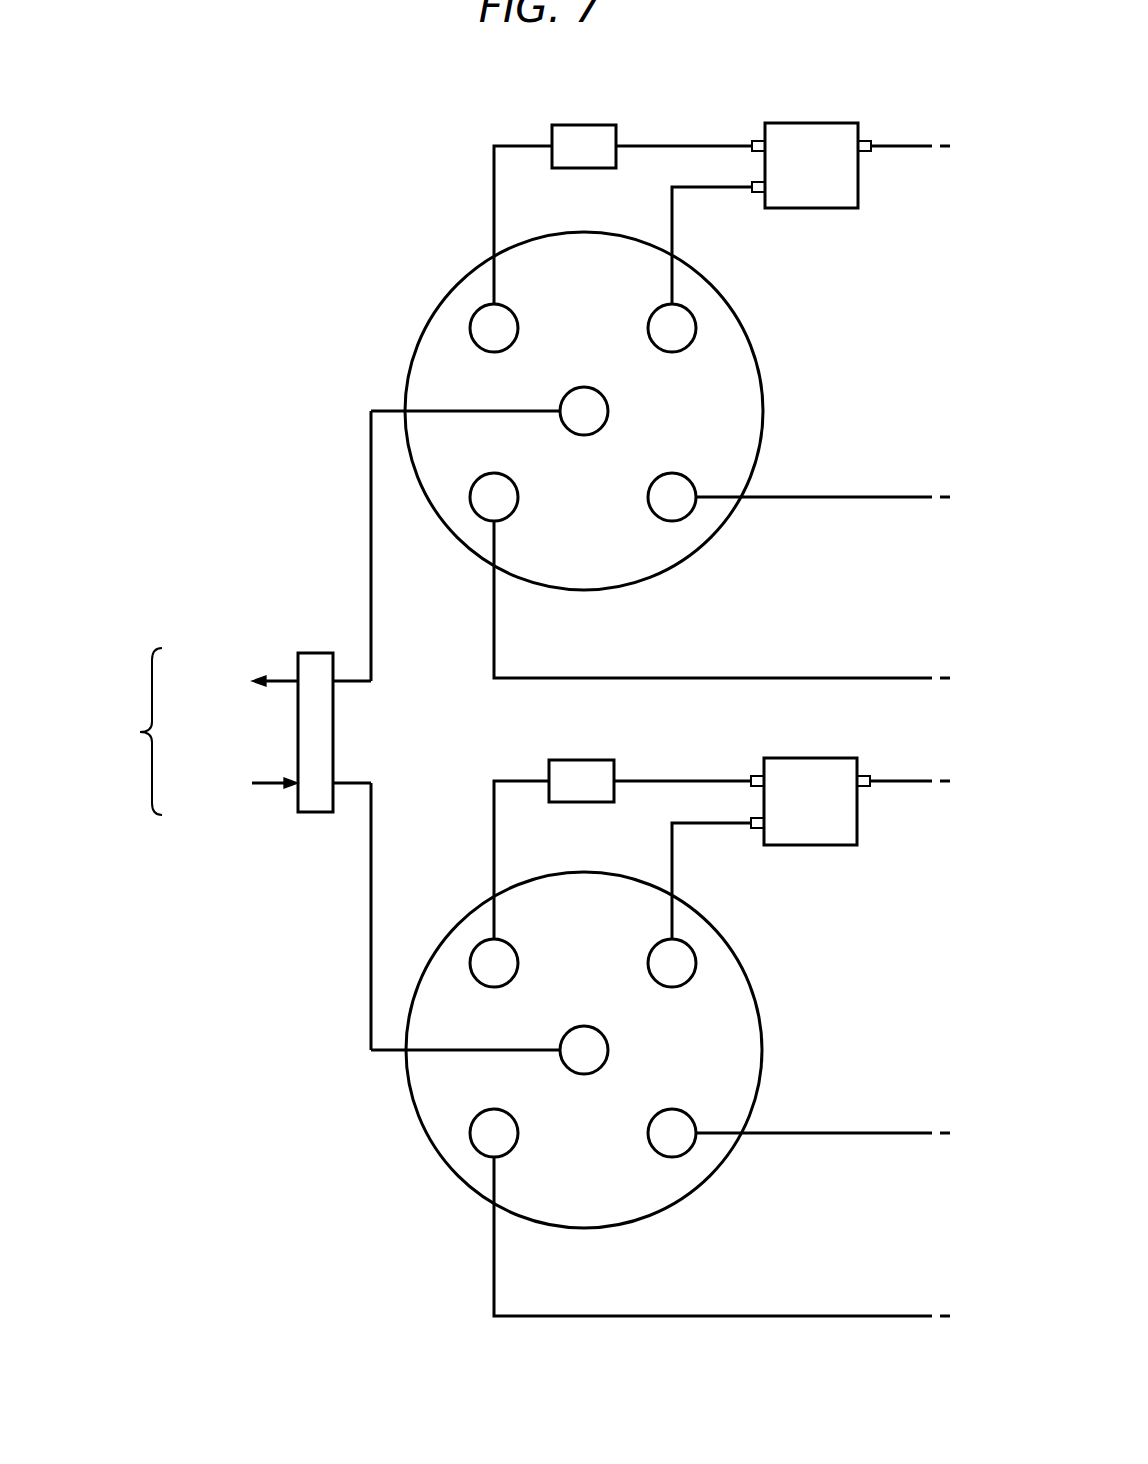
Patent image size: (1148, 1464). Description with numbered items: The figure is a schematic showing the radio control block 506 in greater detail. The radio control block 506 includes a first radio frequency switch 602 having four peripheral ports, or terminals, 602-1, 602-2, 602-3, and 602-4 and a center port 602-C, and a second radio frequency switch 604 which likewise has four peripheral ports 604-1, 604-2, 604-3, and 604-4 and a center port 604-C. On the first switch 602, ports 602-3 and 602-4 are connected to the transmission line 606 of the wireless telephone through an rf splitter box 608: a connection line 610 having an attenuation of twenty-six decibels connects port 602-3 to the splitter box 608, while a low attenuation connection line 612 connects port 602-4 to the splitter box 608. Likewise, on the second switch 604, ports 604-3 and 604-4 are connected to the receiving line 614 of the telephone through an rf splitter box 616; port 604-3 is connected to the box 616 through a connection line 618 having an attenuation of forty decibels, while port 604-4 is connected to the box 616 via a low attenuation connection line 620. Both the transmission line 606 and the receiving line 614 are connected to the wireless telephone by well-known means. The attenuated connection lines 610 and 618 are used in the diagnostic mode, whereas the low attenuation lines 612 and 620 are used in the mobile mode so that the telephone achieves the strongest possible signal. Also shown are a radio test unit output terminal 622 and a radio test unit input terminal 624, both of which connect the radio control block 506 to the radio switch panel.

The radio control block 506 is at (266, 251).
The first radio frequency (RF) switch 602 is at (746, 346).
The peripheral port of first RF switch 602-1 is at (672, 474).
The peripheral port of first RF switch 602-2 is at (494, 474).
The peripheral port of first RF switch 602-3 is at (494, 352).
The peripheral port of first RF switch 602-4 is at (672, 352).
The center port of first RF switch 602-C is at (584, 387).
The second radio frequency (RF) switch 604 is at (746, 969).
The peripheral port of second RF switch 604-1 is at (672, 1110).
The peripheral port of second RF switch 604-2 is at (494, 1110).
The peripheral port of second RF switch 604-3 is at (494, 987).
The peripheral port of second RF switch 604-4 is at (672, 987).
The center port of second RF switch 604-C is at (584, 1025).
The transmission line 606 is at (904, 145).
The rf splitter box 608 is at (813, 122).
The connection line having 26 dB attenuation 610 is at (525, 145).
The low attenuation connection line 612 is at (711, 190).
The receiving line 614 is at (902, 780).
The rf splitter box 616 is at (813, 757).
The connection line having 40 dB attenuation 618 is at (521, 780).
The low attenuation connection line 620 is at (714, 826).
The radio test unit (RTU) output terminal 622 is at (279, 679).
The radio test unit (RTU) input terminal 624 is at (276, 787).